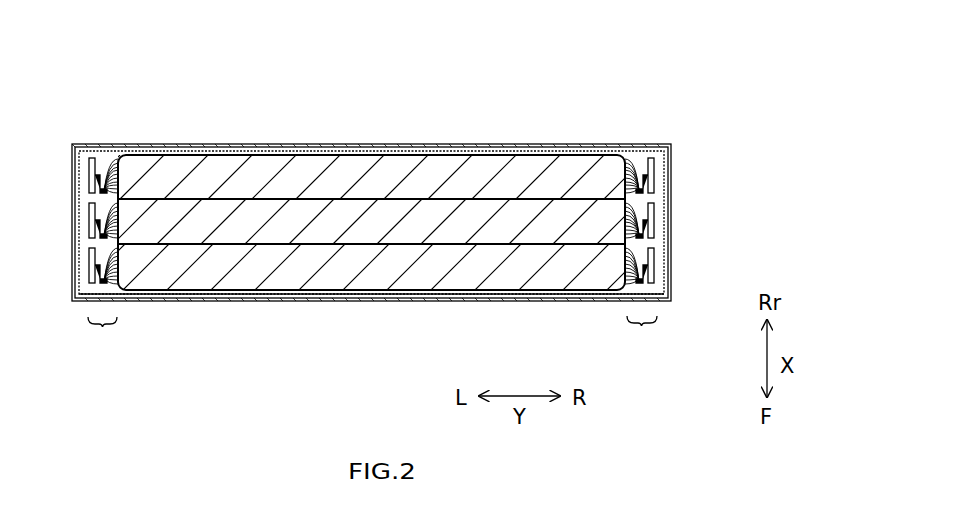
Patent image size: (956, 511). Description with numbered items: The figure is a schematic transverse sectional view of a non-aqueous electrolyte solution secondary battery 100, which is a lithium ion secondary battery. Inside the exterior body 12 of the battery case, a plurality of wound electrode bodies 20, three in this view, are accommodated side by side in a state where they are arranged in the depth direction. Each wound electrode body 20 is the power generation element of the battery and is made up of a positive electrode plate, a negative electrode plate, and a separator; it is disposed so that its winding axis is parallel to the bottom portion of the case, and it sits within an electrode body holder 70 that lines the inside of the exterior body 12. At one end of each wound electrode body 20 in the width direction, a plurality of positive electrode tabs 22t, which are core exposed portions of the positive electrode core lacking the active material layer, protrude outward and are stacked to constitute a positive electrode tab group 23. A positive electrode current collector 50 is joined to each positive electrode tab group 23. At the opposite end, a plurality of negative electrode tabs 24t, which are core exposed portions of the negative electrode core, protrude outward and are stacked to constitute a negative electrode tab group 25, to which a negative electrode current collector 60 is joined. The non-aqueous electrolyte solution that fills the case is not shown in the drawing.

The non-aqueous electrolyte solution secondary battery 100 is at (598, 83).
The exterior body 12 is at (495, 141).
The wound electrode body 20 is at (212, 175).
The positive electrode tab 22t is at (100, 157).
The negative electrode tab 24t is at (640, 155).
The positive electrode current collector 50 is at (88, 163).
The negative electrode current collector 60 is at (655, 165).
The positive electrode tab group 23 is at (102, 336).
The negative electrode tab group 25 is at (642, 336).
The electrode body holder 70 is at (243, 300).